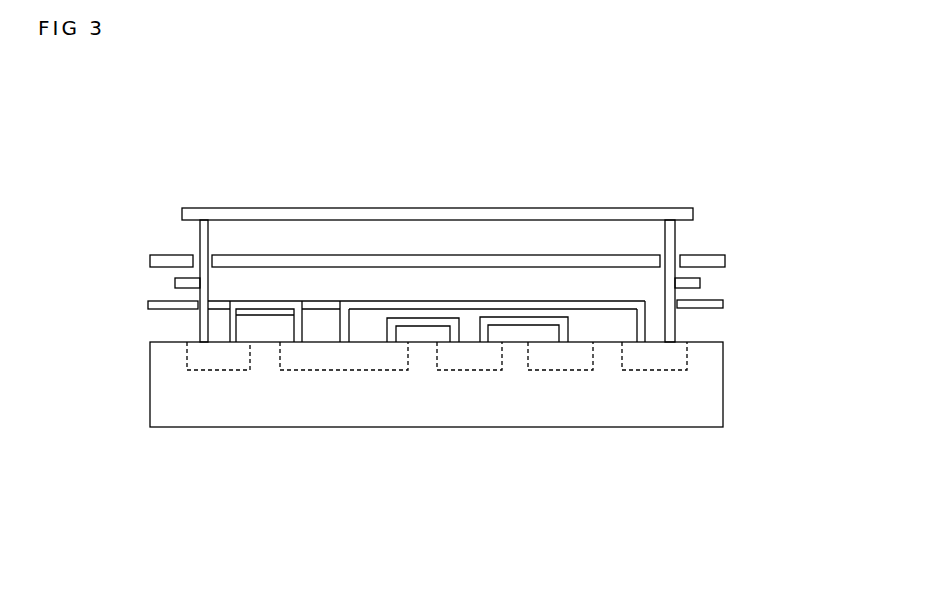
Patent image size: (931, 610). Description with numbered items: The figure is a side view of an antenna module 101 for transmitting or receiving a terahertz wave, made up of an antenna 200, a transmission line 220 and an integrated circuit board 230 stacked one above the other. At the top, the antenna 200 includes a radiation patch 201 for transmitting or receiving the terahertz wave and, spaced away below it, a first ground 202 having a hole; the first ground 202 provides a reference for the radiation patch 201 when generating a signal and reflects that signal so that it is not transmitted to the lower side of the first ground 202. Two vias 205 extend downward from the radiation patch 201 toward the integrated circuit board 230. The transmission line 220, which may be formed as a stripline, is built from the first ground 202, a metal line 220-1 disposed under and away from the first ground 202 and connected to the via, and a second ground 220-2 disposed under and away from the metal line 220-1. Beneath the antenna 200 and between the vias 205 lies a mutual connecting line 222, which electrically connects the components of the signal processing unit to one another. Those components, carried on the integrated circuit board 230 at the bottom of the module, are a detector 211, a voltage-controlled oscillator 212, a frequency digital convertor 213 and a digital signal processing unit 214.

The antenna module 101 is at (436, 326).
The antenna 200 is at (380, 237).
The radiation patch 201 is at (182, 213).
The first ground 202 is at (160, 258).
The vias 205 is at (209, 280).
The transmission line 220 is at (436, 306).
The metal line 220-1 is at (177, 281).
The second ground 220-2 is at (150, 307).
The mutual connecting line 222 is at (483, 318).
The integrated circuit board 230 is at (469, 435).
The detector 211 is at (217, 357).
The voltage-controlled oscillator 212 is at (403, 358).
The frequency digital convertor 213 is at (497, 355).
The digital signal processing unit 214 is at (572, 367).